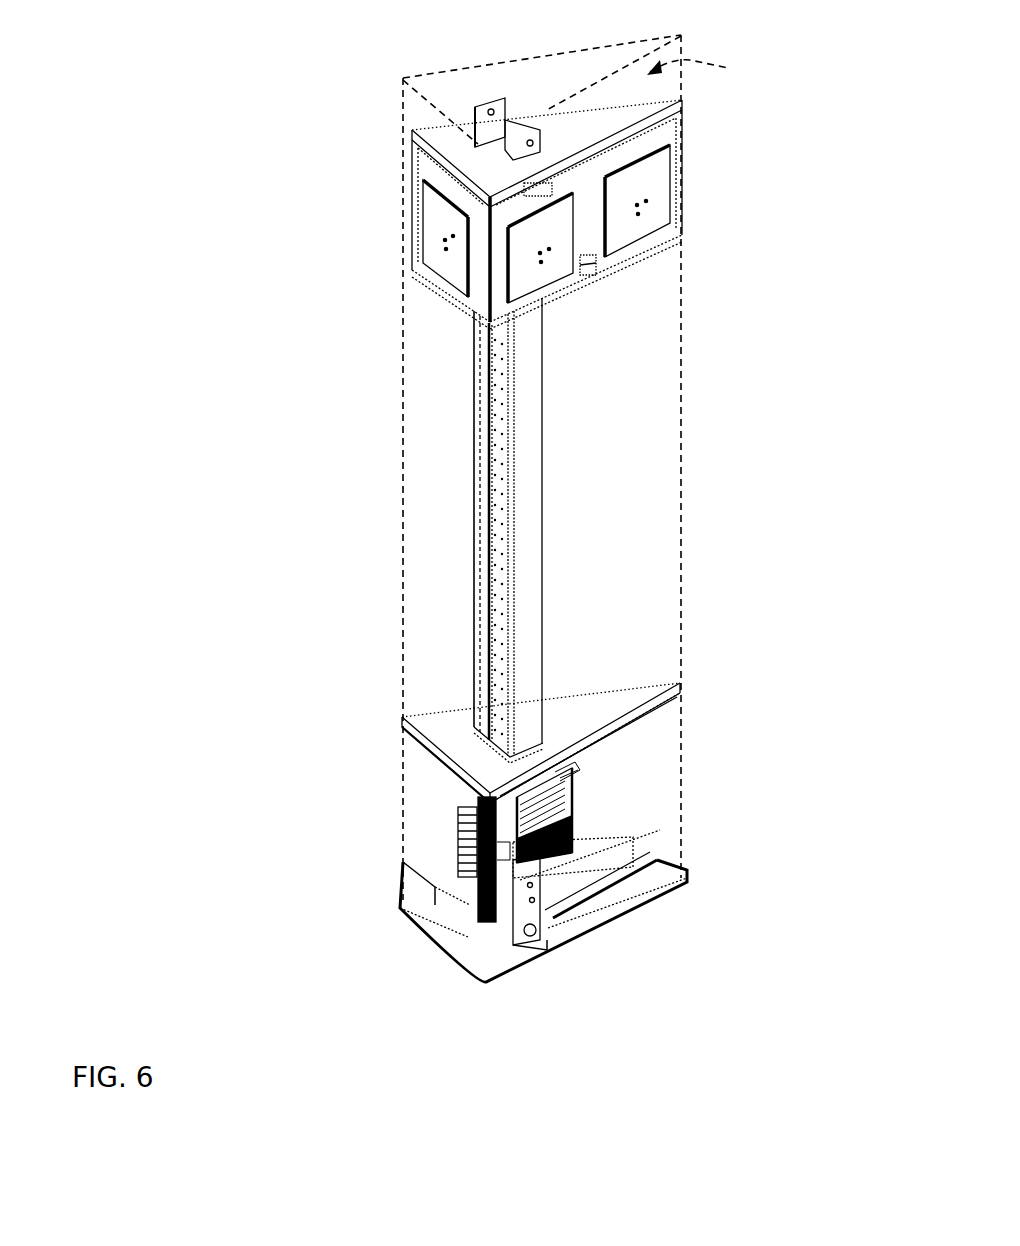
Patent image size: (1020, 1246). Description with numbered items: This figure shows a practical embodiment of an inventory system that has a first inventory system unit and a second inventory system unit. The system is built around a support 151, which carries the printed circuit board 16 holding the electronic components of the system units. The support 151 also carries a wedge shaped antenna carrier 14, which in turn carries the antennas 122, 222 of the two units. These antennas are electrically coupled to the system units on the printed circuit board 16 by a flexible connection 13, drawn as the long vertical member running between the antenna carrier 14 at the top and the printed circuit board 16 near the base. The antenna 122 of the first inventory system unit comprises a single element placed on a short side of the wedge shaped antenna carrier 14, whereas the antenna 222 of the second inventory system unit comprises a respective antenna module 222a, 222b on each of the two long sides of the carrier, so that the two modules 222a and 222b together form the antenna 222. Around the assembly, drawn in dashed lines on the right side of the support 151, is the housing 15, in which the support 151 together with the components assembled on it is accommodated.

The flexible connection 13 is at (525, 463).
The wedge shaped antenna carrier 14 is at (589, 196).
The housing 15 is at (688, 418).
The printed circuit board 16 is at (582, 802).
The antenna 122 is at (430, 227).
The support 151 is at (525, 565).
The antenna 222 is at (701, 190).
The antenna module 222a is at (657, 197).
The antenna module 222b is at (703, 201).